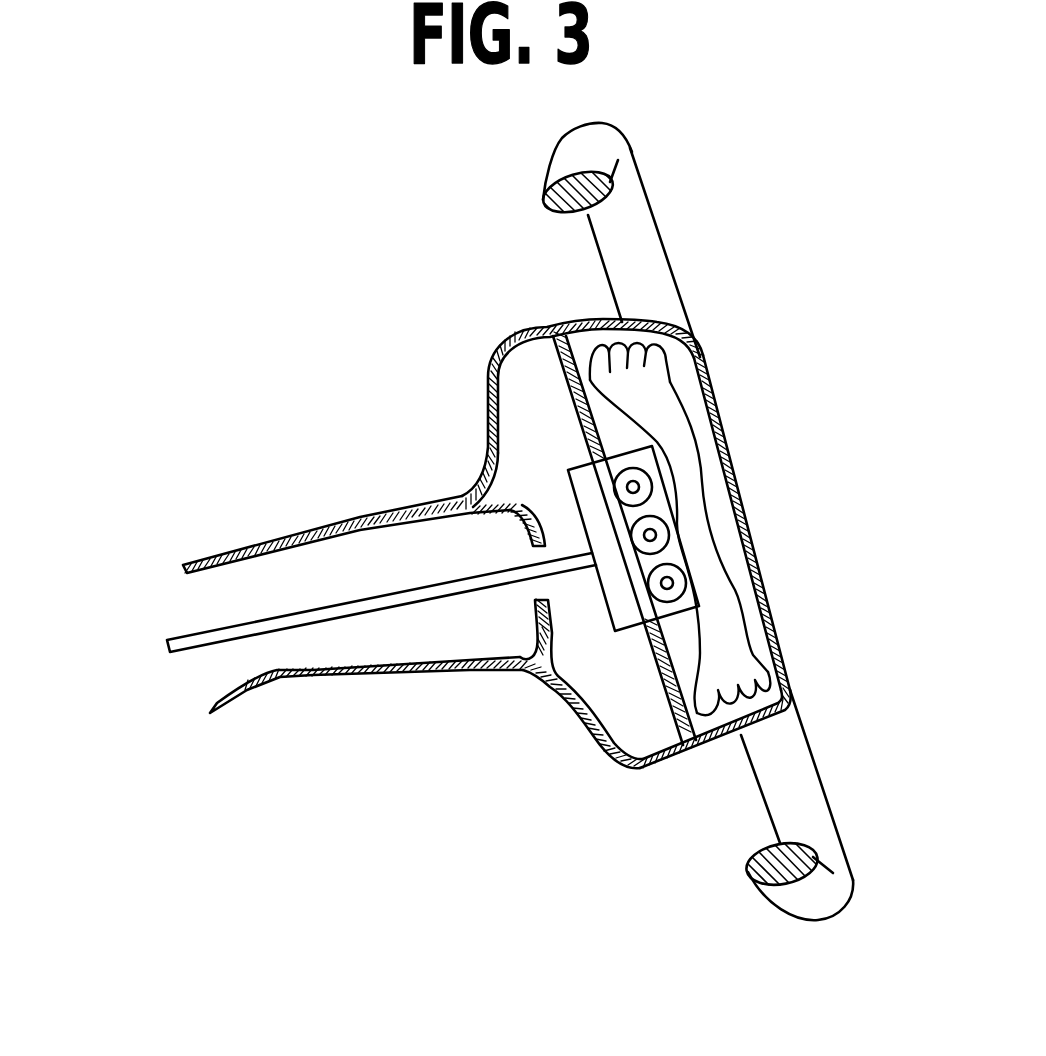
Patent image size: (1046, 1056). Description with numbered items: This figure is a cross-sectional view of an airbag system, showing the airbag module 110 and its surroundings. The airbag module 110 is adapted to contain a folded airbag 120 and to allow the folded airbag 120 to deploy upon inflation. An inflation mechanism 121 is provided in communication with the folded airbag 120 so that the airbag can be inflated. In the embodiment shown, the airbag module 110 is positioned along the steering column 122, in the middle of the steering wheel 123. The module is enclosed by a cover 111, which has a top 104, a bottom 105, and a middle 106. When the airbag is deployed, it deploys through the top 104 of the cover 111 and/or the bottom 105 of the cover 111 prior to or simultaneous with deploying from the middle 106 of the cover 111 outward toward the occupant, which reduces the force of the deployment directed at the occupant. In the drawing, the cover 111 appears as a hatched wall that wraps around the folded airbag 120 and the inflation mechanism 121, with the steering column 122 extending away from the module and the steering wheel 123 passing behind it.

The top 104 is at (687, 327).
The bottom 105 is at (790, 697).
The middle 106 is at (753, 540).
The airbag module 110 is at (217, 752).
The cover 111 is at (712, 750).
The folded airbag 120 is at (697, 510).
The inflation mechanism 121 is at (580, 480).
The steering column 122 is at (467, 673).
The steering wheel 123 is at (838, 888).